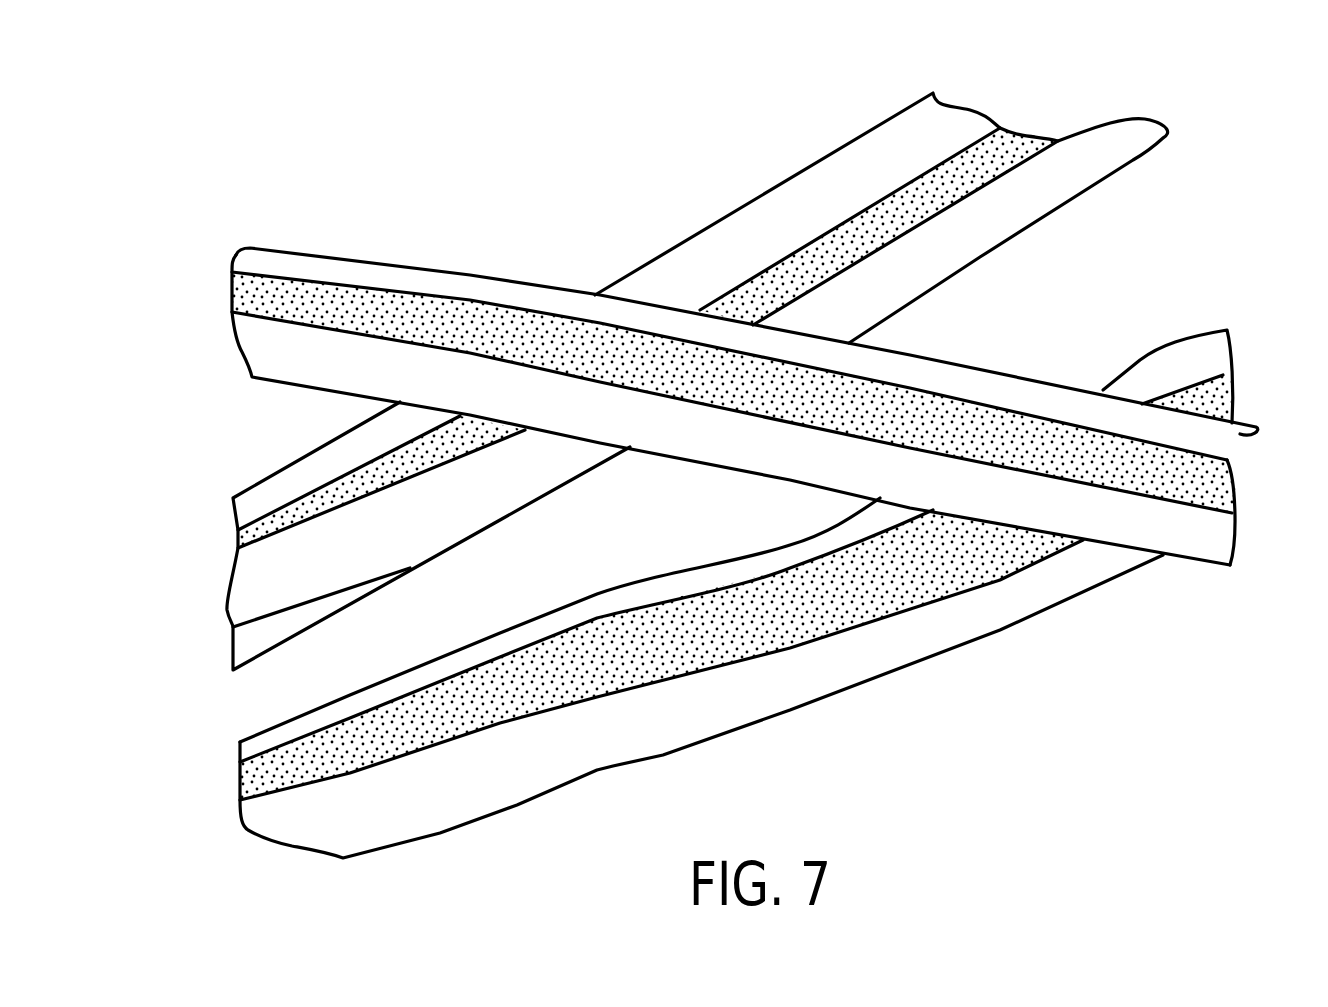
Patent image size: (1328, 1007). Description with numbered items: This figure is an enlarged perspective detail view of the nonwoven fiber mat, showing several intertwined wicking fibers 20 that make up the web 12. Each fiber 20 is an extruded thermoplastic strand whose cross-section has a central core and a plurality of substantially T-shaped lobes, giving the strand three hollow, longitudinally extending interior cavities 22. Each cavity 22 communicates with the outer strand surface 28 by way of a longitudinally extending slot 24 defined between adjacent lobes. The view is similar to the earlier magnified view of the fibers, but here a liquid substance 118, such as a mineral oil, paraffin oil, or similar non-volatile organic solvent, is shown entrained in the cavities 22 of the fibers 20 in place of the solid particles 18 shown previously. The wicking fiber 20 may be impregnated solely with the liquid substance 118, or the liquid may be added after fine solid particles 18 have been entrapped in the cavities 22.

The web 12 is at (1159, 297).
The solid particles 18 is at (1010, 148).
The fiber 20 is at (1082, 147).
The interior cavities 22 is at (258, 293).
The slots 24 is at (950, 463).
The outer strand surface 28 is at (970, 235).
The liquid substance 118 is at (1227, 487).